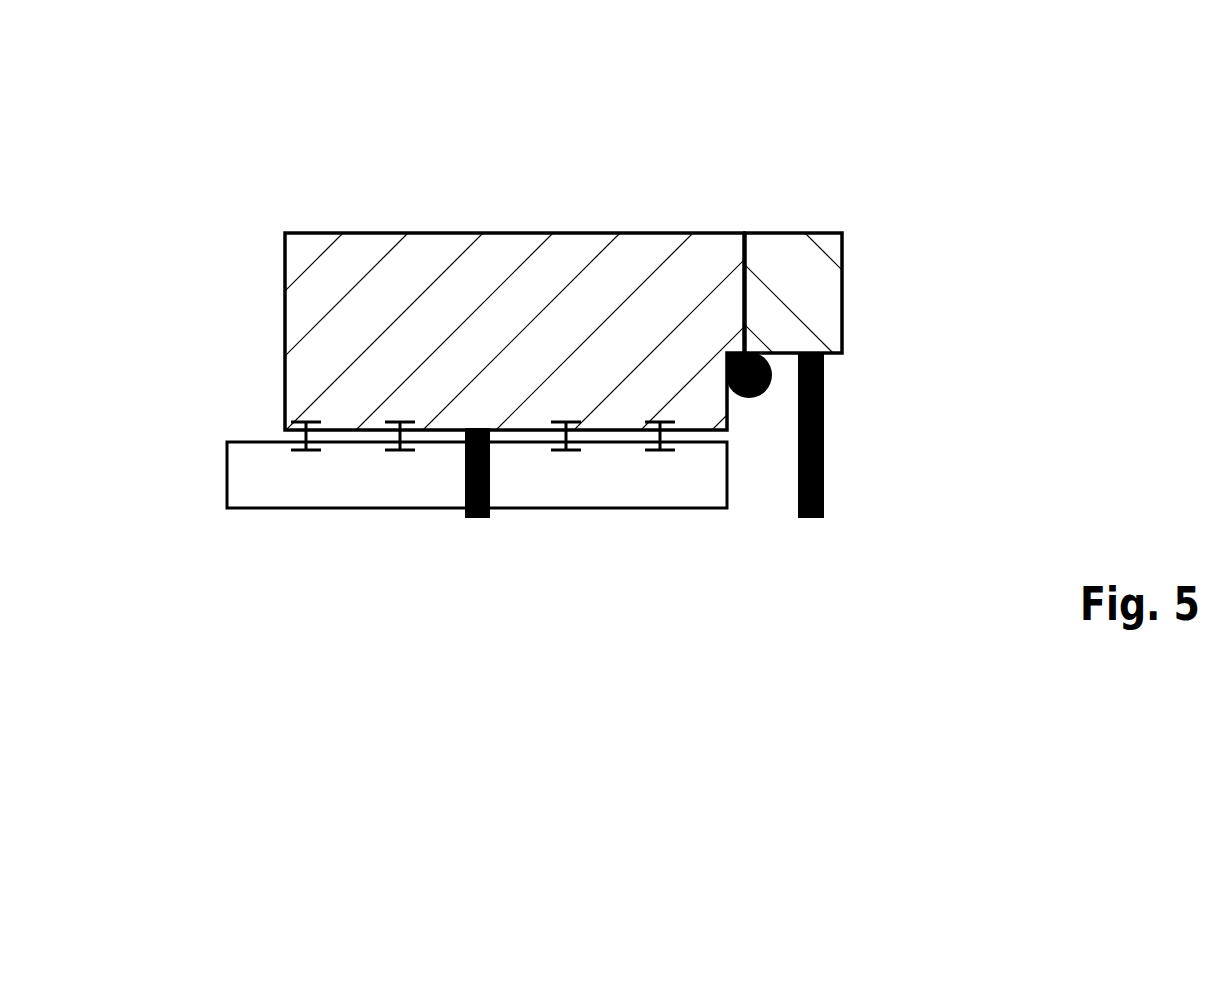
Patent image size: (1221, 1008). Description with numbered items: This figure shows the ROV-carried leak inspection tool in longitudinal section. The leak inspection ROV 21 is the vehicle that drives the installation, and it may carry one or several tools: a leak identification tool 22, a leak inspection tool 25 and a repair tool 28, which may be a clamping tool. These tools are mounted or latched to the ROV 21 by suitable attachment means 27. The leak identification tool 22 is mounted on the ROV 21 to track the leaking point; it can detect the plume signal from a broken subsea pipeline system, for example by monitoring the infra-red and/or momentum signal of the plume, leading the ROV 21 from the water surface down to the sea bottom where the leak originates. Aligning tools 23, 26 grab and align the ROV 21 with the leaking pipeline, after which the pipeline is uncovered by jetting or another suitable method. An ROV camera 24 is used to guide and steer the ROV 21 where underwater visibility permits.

The leak inspection ROV 21 is at (562, 253).
The leak identification tool 22 is at (823, 285).
The aligning tool 23 is at (823, 495).
The ROV camera 24 is at (747, 397).
The leak inspection tool 25 is at (627, 488).
The aligning tool 26 is at (476, 512).
The attachment means 27 is at (399, 450).
The repair tool 28 is at (277, 488).